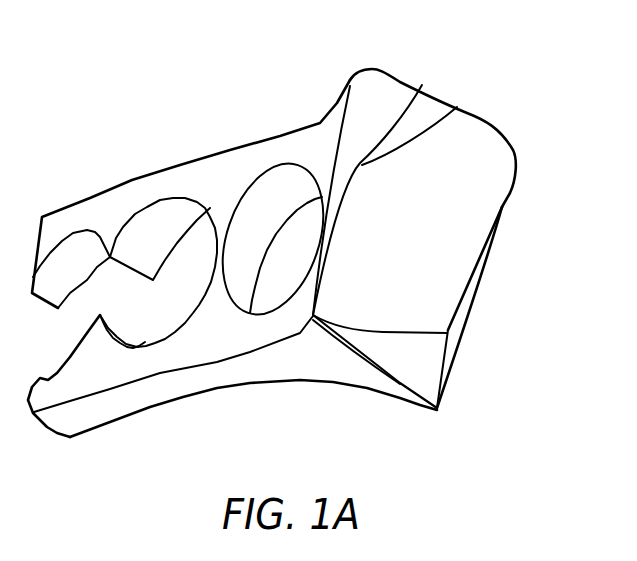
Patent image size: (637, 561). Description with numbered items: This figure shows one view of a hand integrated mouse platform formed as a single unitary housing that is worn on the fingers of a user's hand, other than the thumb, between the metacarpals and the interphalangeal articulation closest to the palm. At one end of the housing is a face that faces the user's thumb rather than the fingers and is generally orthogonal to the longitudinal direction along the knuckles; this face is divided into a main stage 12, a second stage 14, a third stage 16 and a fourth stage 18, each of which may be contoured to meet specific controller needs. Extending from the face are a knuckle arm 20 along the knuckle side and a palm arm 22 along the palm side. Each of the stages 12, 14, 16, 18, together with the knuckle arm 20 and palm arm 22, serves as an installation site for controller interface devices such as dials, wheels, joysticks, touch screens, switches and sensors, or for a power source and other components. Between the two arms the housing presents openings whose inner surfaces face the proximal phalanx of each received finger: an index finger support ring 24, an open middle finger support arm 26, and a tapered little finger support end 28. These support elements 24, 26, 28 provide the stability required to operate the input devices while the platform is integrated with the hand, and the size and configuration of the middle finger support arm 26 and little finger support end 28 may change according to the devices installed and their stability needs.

The main stage 12 is at (432, 209).
The second stage 14 is at (433, 113).
The third stage 16 is at (375, 388).
The fourth stage 18 is at (494, 307).
The knuckle arm 20 is at (191, 194).
The palm arm 22 is at (235, 381).
The index finger support ring 24 is at (273, 209).
The middle finger support arm 26 is at (125, 233).
The little finger support end 28 is at (64, 403).